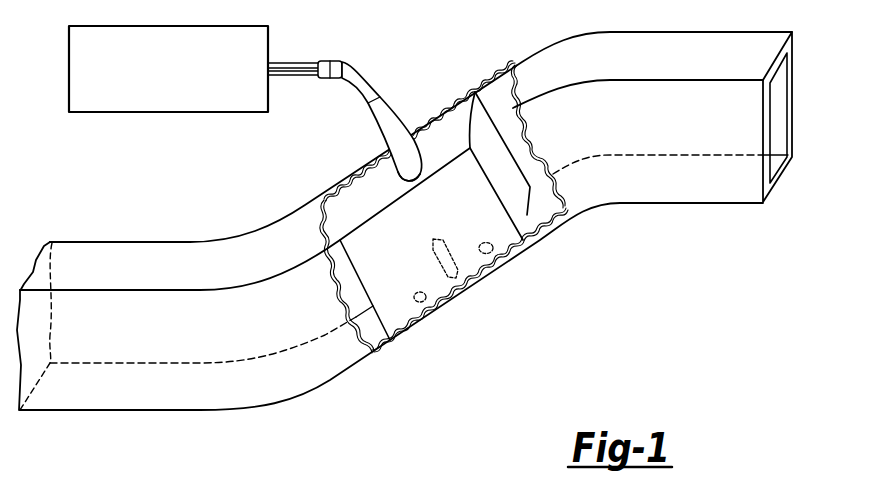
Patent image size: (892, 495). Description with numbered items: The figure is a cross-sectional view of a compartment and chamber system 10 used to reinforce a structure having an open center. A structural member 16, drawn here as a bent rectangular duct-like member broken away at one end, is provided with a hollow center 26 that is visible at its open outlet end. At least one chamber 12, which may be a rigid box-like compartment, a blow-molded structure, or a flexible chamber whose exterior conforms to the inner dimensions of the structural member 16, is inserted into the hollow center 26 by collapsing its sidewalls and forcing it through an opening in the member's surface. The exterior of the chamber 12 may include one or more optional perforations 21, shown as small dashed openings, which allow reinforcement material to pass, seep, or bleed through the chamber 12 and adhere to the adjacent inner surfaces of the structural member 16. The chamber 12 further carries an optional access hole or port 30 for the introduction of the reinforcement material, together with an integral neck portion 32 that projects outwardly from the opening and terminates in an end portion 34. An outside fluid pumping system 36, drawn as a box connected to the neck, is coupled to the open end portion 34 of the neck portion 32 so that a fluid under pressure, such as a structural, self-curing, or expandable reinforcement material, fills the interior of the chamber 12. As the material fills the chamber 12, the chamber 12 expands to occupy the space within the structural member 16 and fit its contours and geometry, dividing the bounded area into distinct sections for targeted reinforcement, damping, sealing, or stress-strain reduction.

The compartment and chamber system 10 is at (403, 414).
The chamber 12 is at (528, 216).
The structural member 16 is at (213, 411).
The perforations 21 is at (427, 297).
The hollow center 26 is at (778, 115).
The access hole or port 30 is at (404, 187).
The neck portion 32 is at (388, 104).
The end portion 34 is at (337, 62).
The fluid pumping system 36 is at (176, 77).